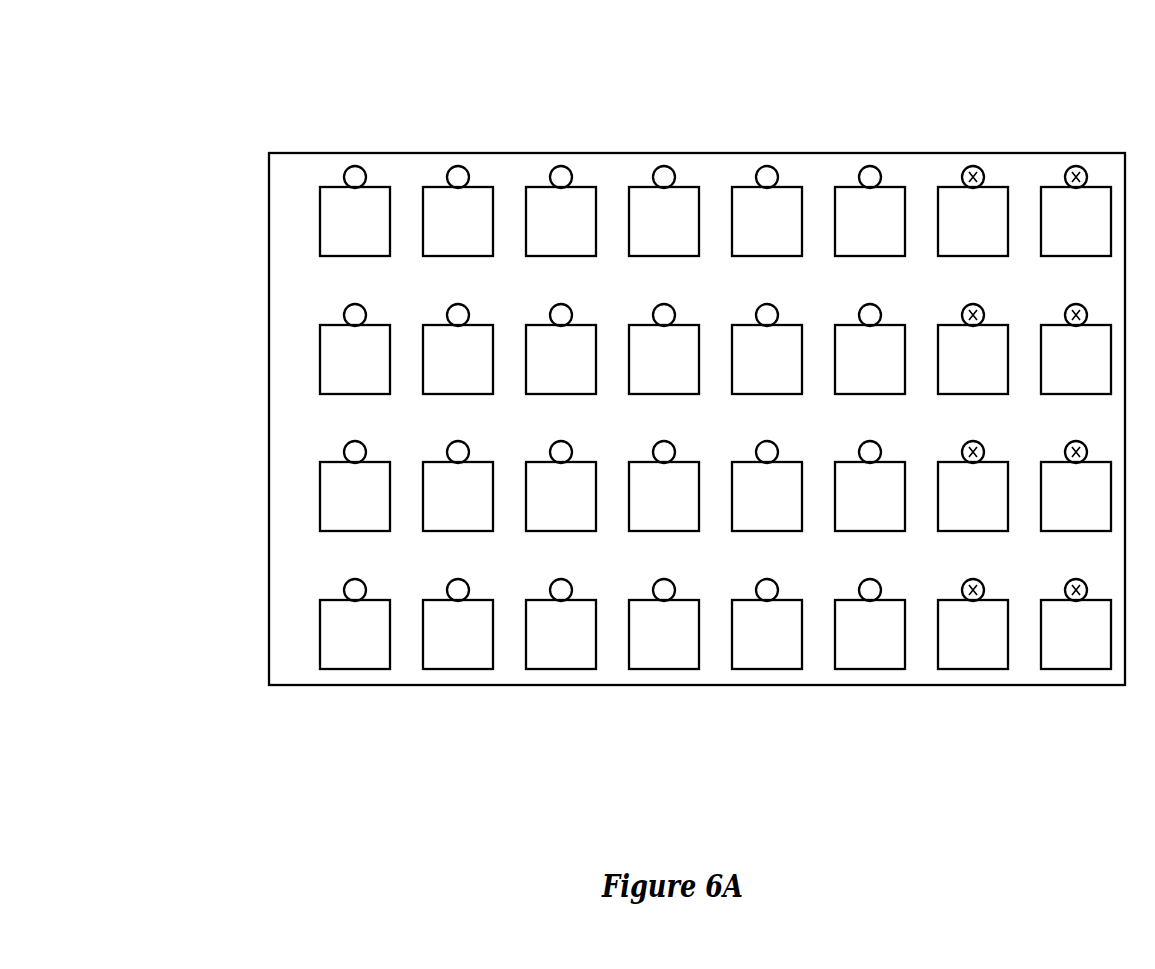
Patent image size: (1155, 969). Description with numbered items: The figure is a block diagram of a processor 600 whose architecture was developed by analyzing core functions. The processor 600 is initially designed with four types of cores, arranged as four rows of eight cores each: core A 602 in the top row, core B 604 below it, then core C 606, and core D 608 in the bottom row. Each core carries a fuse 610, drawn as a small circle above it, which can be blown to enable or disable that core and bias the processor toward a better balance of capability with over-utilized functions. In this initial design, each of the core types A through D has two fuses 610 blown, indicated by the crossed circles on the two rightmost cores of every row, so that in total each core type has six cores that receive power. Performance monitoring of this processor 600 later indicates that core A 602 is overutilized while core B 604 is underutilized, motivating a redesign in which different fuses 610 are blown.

The processor 600 is at (845, 152).
The core A 602 is at (613, 181).
The core B 604 is at (292, 360).
The core C 606 is at (292, 497).
The core D 608 is at (292, 634).
The fuse 610 is at (336, 167).